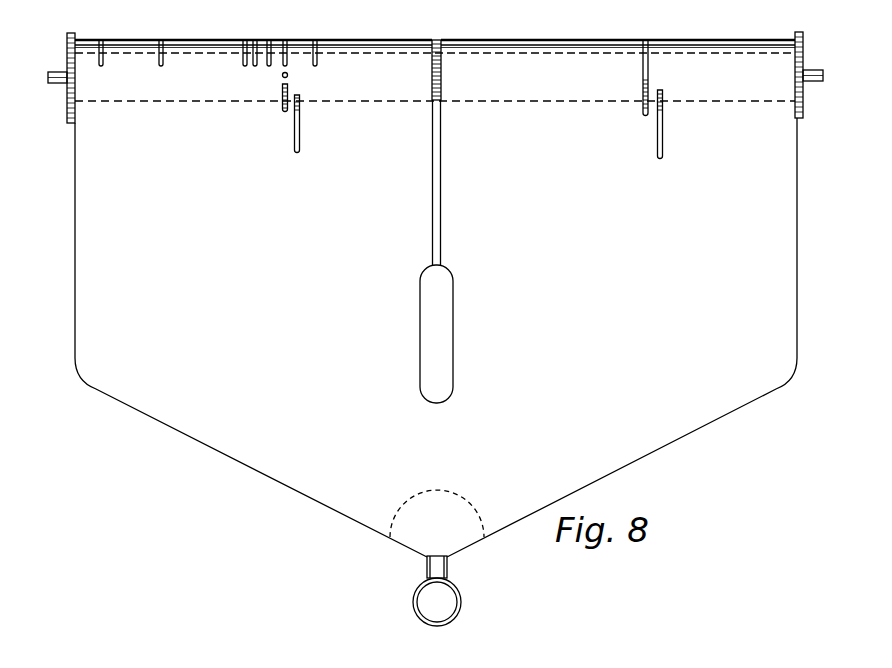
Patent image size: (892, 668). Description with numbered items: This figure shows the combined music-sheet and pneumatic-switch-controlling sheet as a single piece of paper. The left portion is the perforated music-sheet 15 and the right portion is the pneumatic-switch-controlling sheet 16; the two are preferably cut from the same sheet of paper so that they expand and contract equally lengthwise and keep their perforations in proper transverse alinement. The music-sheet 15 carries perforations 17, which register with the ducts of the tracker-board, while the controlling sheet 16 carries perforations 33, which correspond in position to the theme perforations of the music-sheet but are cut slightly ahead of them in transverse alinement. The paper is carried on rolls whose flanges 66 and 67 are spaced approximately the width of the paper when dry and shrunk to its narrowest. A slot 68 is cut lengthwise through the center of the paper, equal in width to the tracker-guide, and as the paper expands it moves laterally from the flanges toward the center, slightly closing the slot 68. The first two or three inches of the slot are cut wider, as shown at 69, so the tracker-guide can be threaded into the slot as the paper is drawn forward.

The perforated music-sheet 15 is at (327, 89).
The pneumatic-switch-controlling sheet 16 is at (500, 89).
The perforations 17 is at (294, 145).
The perforations 33 is at (657, 141).
The flange 66 is at (800, 63).
The flange 67 is at (70, 62).
The slot 68 is at (442, 160).
The enlarged end of slot 69 is at (443, 326).